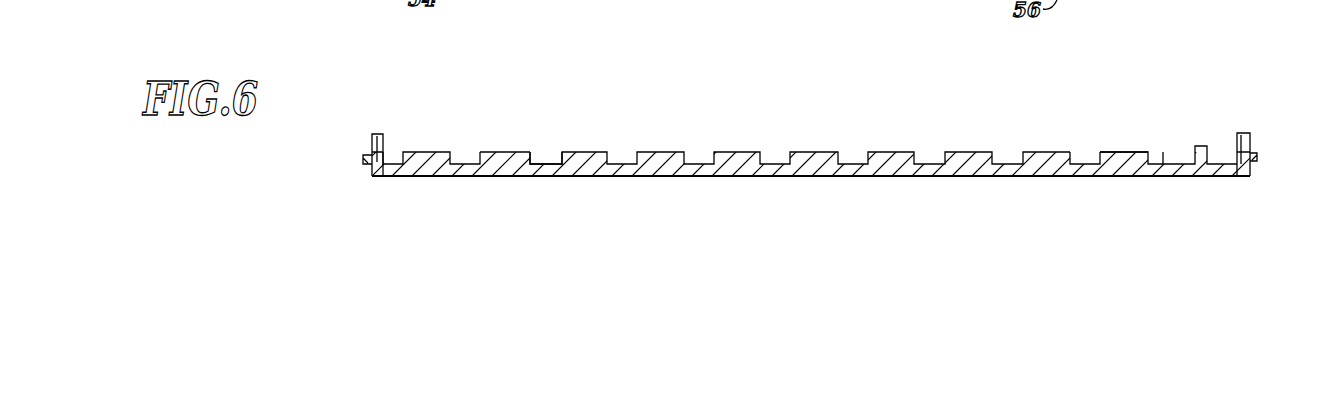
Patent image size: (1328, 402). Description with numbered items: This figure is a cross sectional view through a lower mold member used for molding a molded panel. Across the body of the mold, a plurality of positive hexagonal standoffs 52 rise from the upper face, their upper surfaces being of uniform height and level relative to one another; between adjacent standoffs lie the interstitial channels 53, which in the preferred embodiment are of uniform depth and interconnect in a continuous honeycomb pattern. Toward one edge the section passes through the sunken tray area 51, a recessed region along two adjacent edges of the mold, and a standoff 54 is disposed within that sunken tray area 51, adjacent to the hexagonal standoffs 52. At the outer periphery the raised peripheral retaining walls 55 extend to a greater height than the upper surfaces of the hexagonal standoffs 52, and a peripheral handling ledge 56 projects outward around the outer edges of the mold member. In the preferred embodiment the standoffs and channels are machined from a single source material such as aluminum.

The sunken tray area 51 is at (1175, 152).
The positive hexagonal standoffs 52 is at (505, 152).
The interstitial channels 53 is at (545, 152).
The standoff 54 is at (1200, 146).
The raised peripheral retaining walls 55 is at (378, 134).
The peripheral handling ledge 56 is at (364, 158).